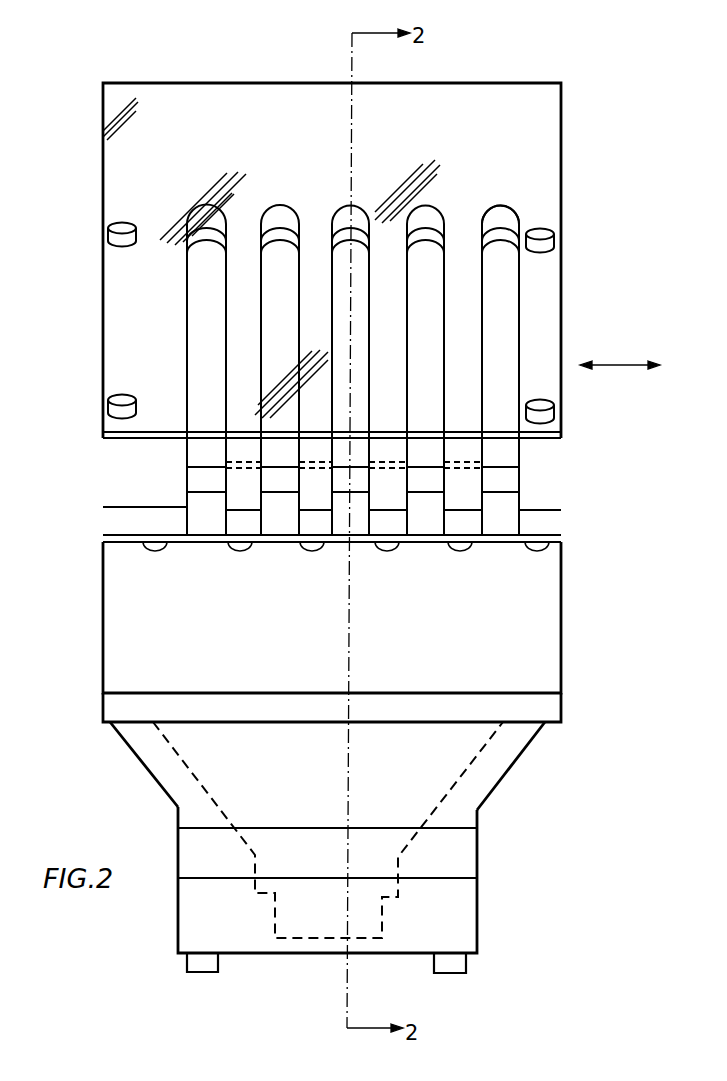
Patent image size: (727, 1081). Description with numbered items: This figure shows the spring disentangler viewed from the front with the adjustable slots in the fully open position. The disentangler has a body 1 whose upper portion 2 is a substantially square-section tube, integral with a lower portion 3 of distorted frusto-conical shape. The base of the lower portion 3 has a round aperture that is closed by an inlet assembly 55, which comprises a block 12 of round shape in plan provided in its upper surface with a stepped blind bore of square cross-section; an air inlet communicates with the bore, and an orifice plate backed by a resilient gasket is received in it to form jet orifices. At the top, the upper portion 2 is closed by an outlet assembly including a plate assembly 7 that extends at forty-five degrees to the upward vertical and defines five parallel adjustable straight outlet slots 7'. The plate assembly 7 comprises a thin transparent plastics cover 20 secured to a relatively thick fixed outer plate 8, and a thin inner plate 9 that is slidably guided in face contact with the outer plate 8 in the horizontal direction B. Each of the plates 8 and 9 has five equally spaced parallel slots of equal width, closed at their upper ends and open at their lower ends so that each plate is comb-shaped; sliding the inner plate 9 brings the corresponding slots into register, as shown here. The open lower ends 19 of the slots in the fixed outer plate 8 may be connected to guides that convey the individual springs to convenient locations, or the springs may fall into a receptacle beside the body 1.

The transparent plastics cover 20 is at (530, 151).
The inner plate 9 is at (503, 221).
The plate assembly 7 is at (394, 370).
The fixed outer plate 8 is at (533, 318).
The adjustable straight outlet slots 7' is at (353, 296).
The open lower ends of the slots 19 is at (208, 527).
The upper portion 2 is at (542, 582).
The body 1 is at (538, 673).
The lower portion 3 is at (492, 767).
The inlet assembly 55 is at (445, 922).
The block 12 is at (330, 927).
The horizontal direction B is at (620, 381).